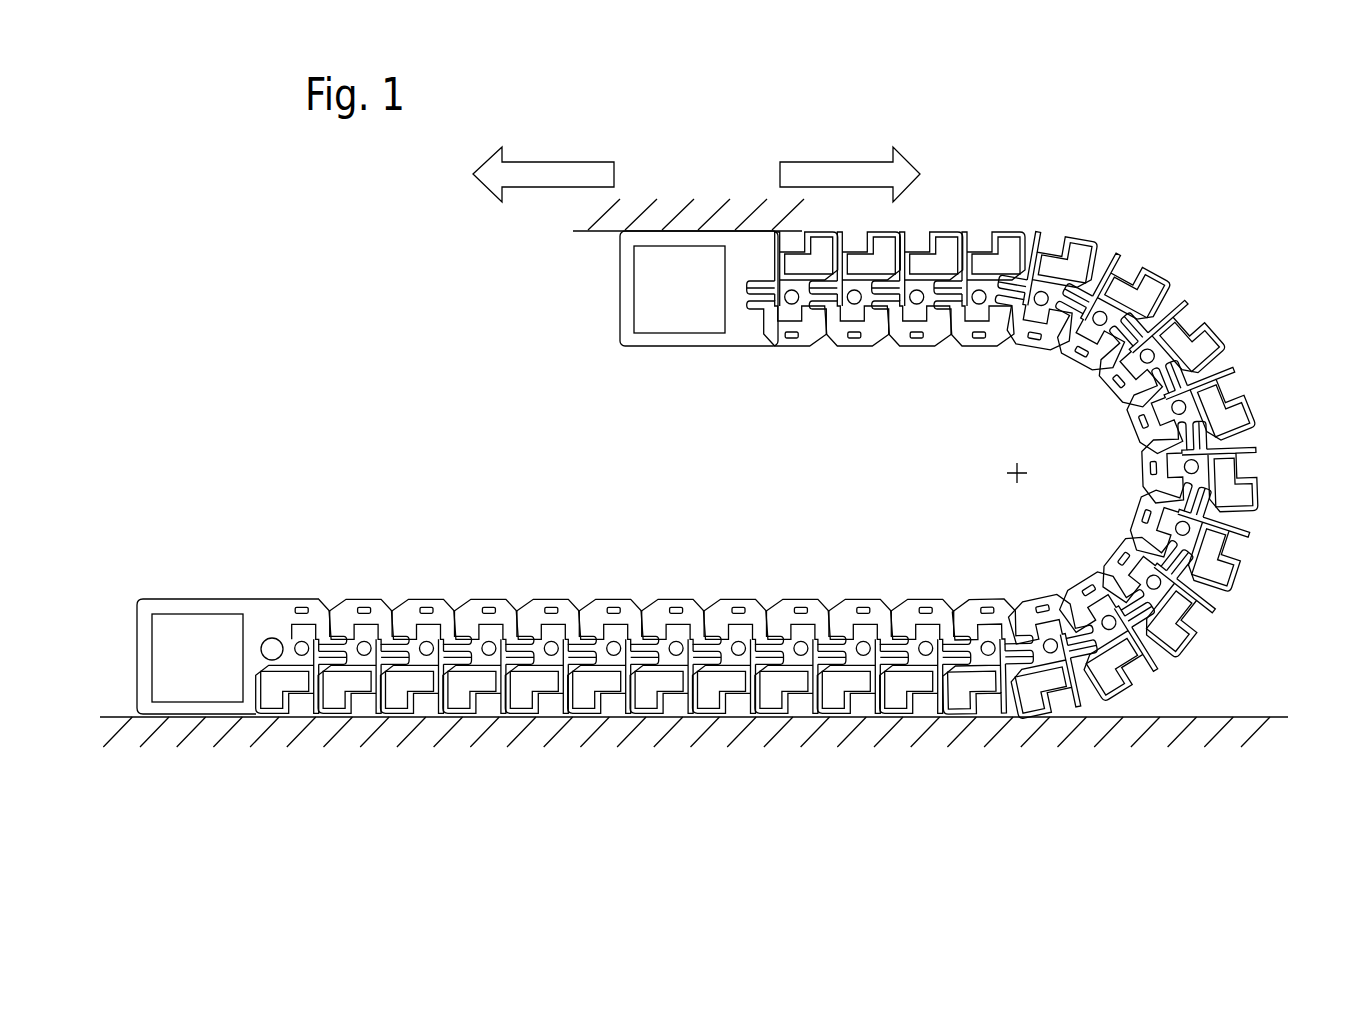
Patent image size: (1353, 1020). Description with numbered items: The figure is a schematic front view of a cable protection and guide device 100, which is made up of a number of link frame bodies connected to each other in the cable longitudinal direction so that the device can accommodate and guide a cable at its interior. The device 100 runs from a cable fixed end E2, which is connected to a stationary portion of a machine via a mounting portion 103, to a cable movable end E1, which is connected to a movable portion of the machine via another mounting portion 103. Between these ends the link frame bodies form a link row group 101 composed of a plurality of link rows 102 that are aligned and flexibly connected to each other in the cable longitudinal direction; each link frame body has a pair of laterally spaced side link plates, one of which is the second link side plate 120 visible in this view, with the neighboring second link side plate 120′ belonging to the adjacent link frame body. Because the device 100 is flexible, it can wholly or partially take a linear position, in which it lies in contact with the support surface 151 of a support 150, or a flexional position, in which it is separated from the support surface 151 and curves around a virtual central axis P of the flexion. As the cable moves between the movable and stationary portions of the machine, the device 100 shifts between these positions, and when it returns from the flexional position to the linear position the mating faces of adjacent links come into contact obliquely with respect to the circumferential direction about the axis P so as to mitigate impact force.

The cable protection and guide device 100 is at (251, 175).
The link row group 101 is at (411, 582).
The link row 102 is at (975, 588).
The mounting portion 103 is at (457, 438).
The second link side plate 120 is at (613, 590).
The adjacent link 120′ is at (684, 590).
The support 150 is at (700, 685).
The support surface 151 is at (1253, 716).
The cable movable end E1 is at (692, 268).
The cable fixed end E2 is at (199, 628).
The virtual central axis P is at (1022, 470).